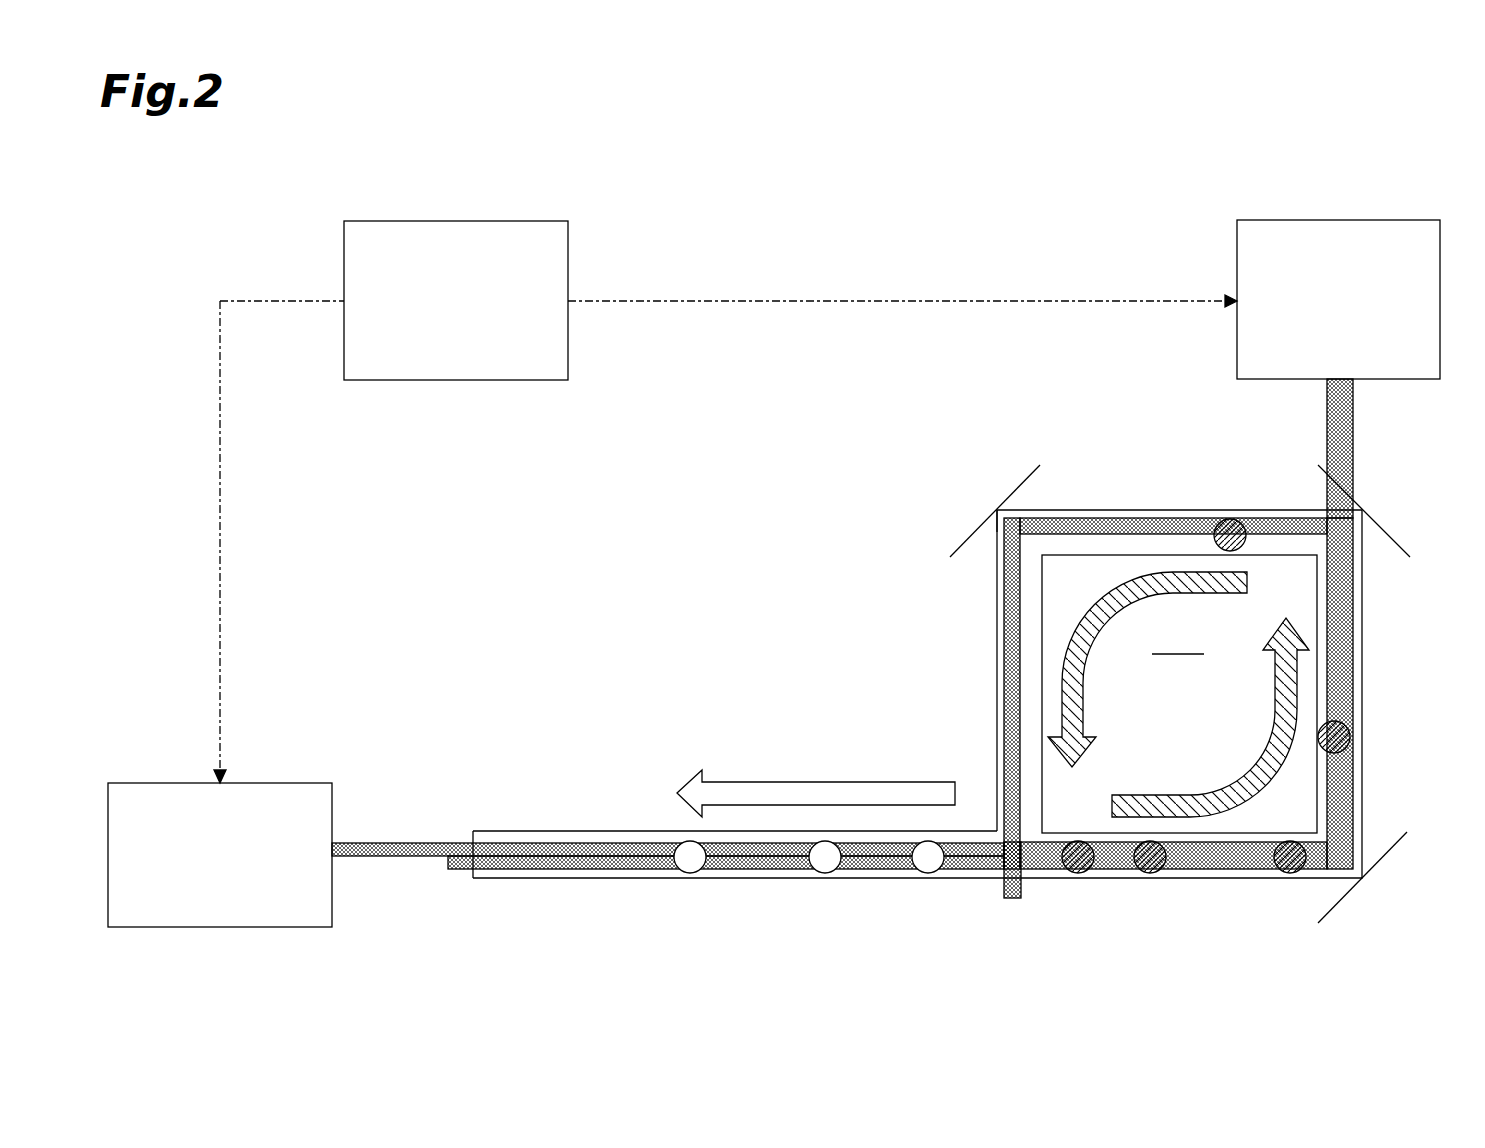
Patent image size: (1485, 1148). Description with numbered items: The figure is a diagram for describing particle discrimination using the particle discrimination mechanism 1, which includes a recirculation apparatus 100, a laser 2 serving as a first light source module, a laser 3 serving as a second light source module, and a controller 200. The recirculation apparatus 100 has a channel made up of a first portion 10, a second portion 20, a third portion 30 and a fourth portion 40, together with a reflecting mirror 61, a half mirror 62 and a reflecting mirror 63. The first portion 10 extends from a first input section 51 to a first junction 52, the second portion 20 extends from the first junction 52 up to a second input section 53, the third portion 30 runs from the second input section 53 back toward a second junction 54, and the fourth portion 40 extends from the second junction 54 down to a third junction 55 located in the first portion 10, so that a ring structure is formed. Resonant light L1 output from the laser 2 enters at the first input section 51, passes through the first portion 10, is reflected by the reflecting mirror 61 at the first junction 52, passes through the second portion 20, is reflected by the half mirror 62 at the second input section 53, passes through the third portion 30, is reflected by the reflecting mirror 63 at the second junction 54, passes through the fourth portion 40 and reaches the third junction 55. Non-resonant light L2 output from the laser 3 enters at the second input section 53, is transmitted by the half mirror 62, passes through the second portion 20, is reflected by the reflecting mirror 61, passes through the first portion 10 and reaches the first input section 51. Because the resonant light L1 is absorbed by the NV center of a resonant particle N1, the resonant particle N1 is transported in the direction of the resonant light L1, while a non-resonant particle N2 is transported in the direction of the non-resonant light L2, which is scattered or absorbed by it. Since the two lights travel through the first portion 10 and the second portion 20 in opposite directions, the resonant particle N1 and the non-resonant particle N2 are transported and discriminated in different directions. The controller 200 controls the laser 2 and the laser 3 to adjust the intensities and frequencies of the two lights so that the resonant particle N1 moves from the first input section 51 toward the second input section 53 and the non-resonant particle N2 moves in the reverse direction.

The particle discrimination mechanism 1 is at (680, 212).
The laser 2 is at (159, 783).
The laser 3 is at (1338, 220).
The controller 200 is at (455, 221).
The first portion 10 is at (920, 878).
The second portion 20 is at (1365, 698).
The third portion 30 is at (1150, 510).
The fourth portion 40 is at (997, 608).
The first input section 51 is at (450, 862).
The first junction 52 is at (1366, 880).
The second input section 53 is at (1362, 510).
The second junction 54 is at (997, 510).
The third junction 55 is at (1003, 870).
The reflecting mirror 61 is at (1390, 837).
The half mirror 62 is at (1318, 465).
The reflecting mirror 63 is at (1040, 466).
The recirculation apparatus 100 is at (1179, 694).
The resonant light L1 is at (425, 843).
The non-resonant light L2 is at (1354, 428).
The resonant particle N1 is at (1085, 876).
The non-resonant particle N2 is at (690, 875).